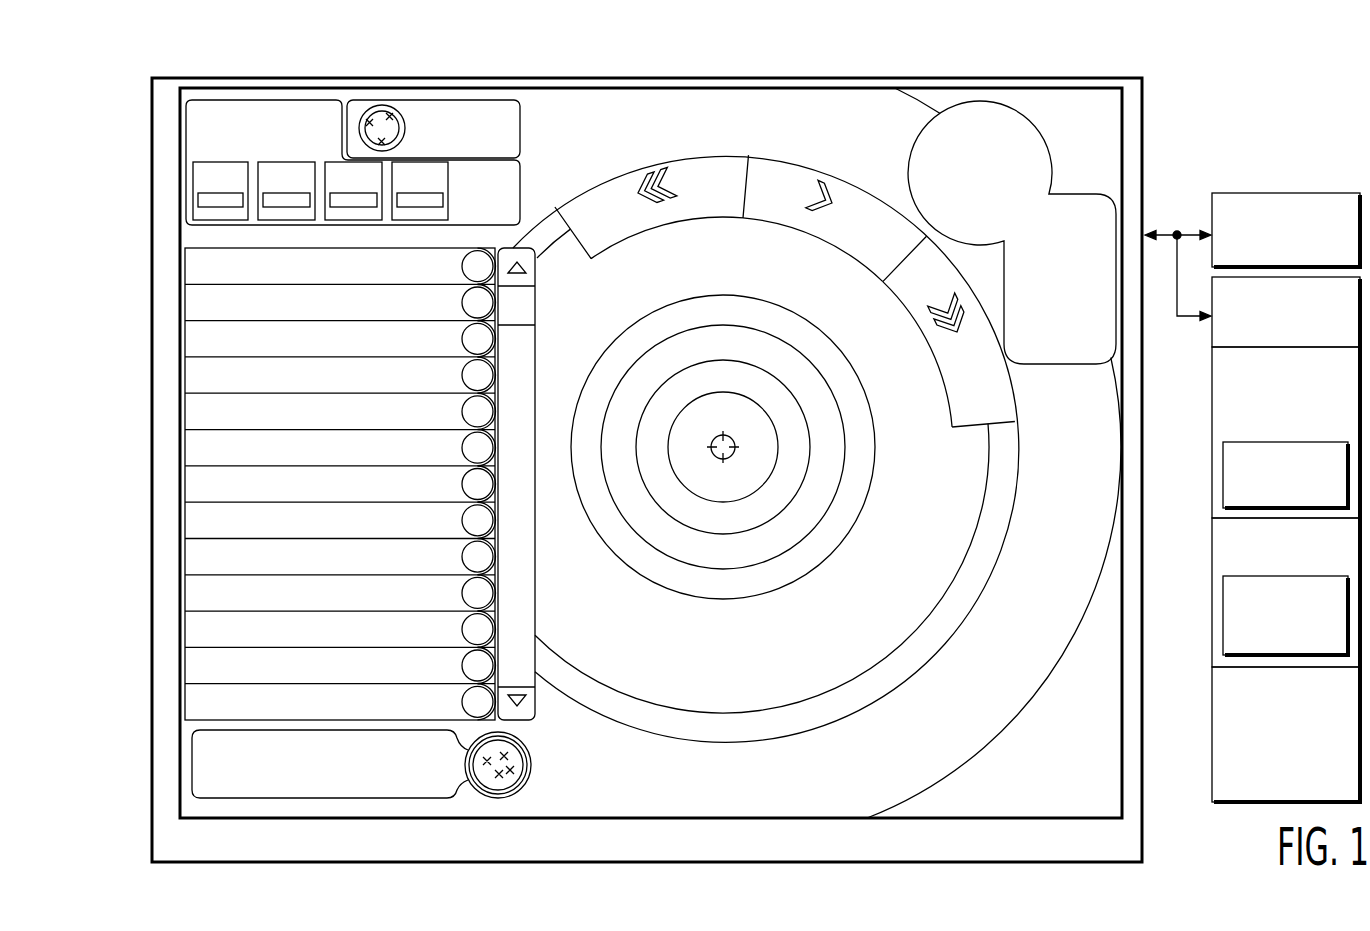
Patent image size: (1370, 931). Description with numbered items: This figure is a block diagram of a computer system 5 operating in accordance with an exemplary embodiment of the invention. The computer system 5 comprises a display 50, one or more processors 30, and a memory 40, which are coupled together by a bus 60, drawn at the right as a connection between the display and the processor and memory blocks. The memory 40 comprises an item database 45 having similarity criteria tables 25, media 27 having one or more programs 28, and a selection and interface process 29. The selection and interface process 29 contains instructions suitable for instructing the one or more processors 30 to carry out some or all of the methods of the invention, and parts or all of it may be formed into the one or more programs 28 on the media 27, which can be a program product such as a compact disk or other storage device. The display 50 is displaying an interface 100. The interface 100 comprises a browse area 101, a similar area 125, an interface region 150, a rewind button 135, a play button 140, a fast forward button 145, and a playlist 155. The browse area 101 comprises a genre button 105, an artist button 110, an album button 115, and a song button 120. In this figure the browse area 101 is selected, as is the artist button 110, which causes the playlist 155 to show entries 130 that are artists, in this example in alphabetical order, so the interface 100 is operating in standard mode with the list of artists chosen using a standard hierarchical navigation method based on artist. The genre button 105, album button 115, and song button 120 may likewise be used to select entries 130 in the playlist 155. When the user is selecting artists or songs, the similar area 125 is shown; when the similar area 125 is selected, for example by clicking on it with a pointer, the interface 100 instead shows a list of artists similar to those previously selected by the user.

The computer system 5 is at (1172, 818).
The display 50 is at (1065, 855).
The interface 100 is at (1059, 801).
The browse area 101 is at (235, 110).
The genre button 105 is at (192, 204).
The artist button 110 is at (300, 162).
The album button 115 is at (330, 162).
The song button 120 is at (410, 162).
The similar area 125 is at (497, 102).
The entries 130 is at (173, 720).
The rewind button 135 is at (690, 202).
The play button 140 is at (858, 248).
The fast forward button 145 is at (963, 408).
The interface region 150 is at (808, 447).
The playlist 155 is at (359, 782).
The bus 60 is at (1186, 318).
The processors 30 is at (1272, 262).
The memory 40 is at (1272, 340).
The item database 45 is at (1272, 435).
The similarity criteria tables 25 is at (1272, 505).
The media 27 is at (1295, 565).
The programs 28 is at (1272, 647).
The selection and interface process 29 is at (1272, 793).